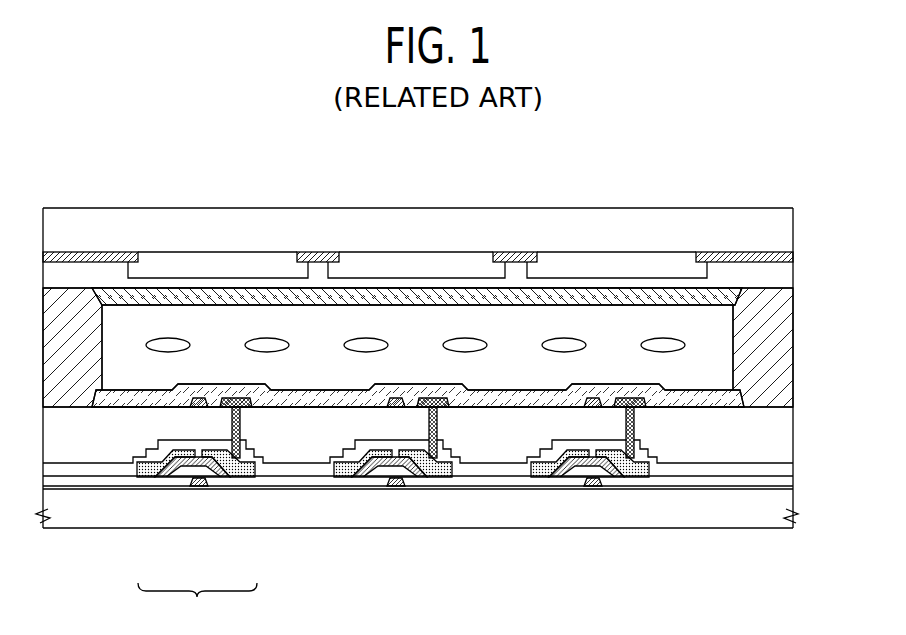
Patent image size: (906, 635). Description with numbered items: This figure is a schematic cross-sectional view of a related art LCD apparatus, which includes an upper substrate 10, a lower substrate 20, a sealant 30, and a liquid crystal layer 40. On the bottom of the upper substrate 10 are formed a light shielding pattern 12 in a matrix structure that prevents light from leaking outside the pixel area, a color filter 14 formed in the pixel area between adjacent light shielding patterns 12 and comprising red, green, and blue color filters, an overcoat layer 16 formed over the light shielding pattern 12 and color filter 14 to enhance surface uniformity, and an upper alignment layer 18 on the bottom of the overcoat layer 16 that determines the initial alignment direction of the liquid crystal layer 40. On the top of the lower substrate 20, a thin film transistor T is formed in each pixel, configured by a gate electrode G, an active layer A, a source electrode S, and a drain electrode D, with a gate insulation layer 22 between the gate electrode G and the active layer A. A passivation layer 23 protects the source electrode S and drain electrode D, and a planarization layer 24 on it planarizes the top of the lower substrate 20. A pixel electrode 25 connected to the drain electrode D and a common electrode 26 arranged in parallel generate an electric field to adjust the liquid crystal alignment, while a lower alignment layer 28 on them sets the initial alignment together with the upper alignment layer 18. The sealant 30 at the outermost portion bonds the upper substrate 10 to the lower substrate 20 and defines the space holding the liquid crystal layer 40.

The upper substrate 10 is at (780, 231).
The light shielding pattern 12 is at (782, 257).
The color filter 14 is at (226, 268).
The overcoat layer 16 is at (780, 281).
The upper alignment layer 18 is at (664, 296).
The lower substrate 20 is at (785, 503).
The gate insulation layer 22 is at (782, 484).
The passivation layer 23 is at (782, 470).
The planarization layer 24 is at (782, 437).
The pixel electrode 25 is at (435, 428).
The common electrode 26 is at (392, 408).
The lower alignment layer 28 is at (702, 400).
The sealant 30 is at (762, 321).
The liquid crystal layer 40 is at (698, 342).
The source electrode S is at (143, 476).
The active layer A is at (167, 473).
The gate electrode G is at (197, 487).
The drain electrode D is at (245, 473).
The thin film transistor T is at (197, 602).